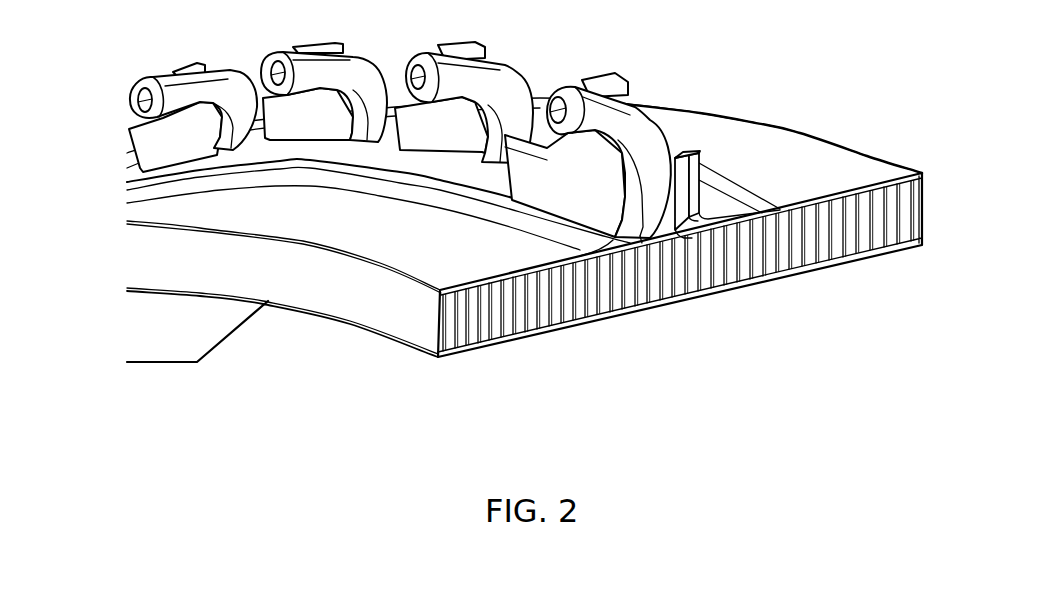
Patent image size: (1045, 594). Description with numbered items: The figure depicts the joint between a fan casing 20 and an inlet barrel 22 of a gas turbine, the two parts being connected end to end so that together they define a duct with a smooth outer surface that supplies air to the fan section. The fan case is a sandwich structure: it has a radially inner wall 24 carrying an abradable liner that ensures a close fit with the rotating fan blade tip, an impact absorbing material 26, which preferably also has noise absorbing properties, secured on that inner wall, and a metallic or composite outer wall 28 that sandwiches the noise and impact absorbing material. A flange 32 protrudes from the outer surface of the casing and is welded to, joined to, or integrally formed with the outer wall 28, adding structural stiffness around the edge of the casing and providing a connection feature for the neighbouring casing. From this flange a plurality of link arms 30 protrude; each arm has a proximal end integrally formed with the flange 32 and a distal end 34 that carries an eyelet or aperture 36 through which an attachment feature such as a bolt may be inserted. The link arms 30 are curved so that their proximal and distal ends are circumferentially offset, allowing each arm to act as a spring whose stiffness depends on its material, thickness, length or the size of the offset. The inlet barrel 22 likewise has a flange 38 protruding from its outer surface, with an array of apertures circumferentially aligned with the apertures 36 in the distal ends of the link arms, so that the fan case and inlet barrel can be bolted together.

The fan casing 20 is at (378, 375).
The inlet barrel 22 is at (835, 306).
The radially inner wall 24 is at (470, 350).
The impact absorbing material 26 is at (355, 297).
The outer wall 28 is at (302, 243).
The link arms 30 is at (648, 130).
The flange 32 is at (662, 230).
The distal end 34 is at (577, 93).
The eyelet or aperture 36 is at (566, 115).
The flange 38 is at (693, 160).